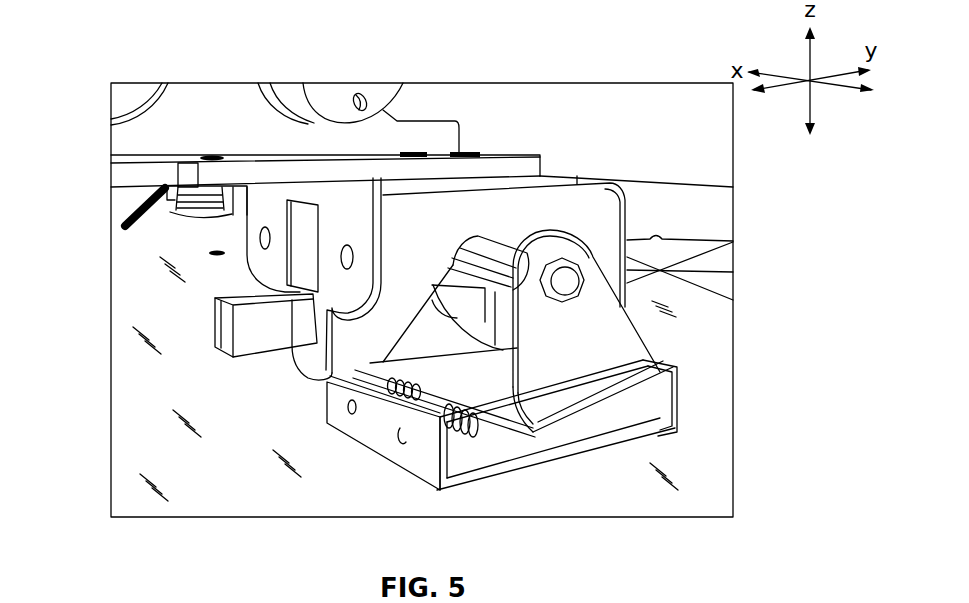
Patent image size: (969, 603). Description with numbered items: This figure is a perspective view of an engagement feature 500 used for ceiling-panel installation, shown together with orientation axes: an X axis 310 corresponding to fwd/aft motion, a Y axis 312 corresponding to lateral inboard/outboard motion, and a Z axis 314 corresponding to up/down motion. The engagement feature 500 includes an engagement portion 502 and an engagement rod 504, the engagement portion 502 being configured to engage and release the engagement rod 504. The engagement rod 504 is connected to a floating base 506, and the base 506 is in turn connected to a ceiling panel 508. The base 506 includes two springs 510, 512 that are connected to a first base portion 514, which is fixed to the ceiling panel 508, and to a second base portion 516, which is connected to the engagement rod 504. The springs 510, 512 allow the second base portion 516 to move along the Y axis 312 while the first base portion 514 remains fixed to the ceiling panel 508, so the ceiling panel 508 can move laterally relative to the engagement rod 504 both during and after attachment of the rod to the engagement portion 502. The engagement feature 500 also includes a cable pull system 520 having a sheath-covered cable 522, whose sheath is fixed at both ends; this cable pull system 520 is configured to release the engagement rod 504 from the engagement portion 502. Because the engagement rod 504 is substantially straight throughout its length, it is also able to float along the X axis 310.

The engagement feature 500 is at (124, 252).
The engagement portion 502 is at (608, 210).
The engagement rod 504 is at (570, 283).
The base 506 is at (570, 460).
The ceiling panel 508 is at (663, 490).
The spring 510 is at (410, 395).
The spring 512 is at (455, 440).
The first base portion 514 is at (360, 432).
The second base portion 516 is at (637, 383).
The cable pull system 520 is at (706, 198).
The sheath-covered cable 522 is at (680, 270).
The X axis 310 is at (836, 88).
The Y axis 312 is at (784, 88).
The Z axis 314 is at (808, 50).